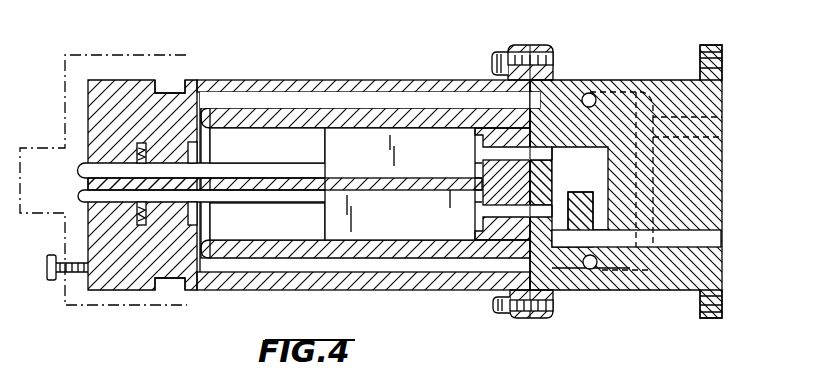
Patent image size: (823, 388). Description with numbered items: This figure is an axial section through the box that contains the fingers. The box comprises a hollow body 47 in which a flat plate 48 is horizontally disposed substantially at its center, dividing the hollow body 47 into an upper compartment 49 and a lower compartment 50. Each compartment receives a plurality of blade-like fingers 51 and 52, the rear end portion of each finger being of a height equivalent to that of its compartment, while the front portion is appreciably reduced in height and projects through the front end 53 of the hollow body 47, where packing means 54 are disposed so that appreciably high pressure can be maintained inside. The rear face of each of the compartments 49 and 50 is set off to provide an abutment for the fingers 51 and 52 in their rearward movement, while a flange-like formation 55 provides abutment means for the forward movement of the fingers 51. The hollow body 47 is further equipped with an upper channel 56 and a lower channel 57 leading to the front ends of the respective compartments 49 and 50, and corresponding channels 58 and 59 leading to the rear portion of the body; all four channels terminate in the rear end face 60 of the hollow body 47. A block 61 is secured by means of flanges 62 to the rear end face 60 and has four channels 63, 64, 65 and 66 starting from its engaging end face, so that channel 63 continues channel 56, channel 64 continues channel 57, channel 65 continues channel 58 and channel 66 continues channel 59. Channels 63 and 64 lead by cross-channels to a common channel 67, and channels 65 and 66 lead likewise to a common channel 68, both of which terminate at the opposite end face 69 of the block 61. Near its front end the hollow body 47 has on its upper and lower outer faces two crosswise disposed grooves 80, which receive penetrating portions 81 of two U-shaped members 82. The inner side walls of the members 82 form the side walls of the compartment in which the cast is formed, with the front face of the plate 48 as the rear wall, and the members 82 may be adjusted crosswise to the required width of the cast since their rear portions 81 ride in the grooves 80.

The hollow body 47 is at (318, 85).
The flat plate 48 is at (378, 182).
The upper compartment 49 is at (292, 131).
The lower compartment 50 is at (273, 233).
The blade-like fingers 51 is at (405, 132).
The blade-like fingers 52 is at (428, 228).
The front end 53 is at (130, 275).
The packing means 54 is at (140, 212).
The flange-like formation 55 is at (213, 130).
The upper channel 56 is at (347, 100).
The lower channel 57 is at (340, 268).
The channel 58 is at (503, 156).
The channel 59 is at (503, 210).
The rear end face 60 is at (530, 240).
The block 61 is at (690, 275).
The flanges 62 is at (547, 320).
The channel 63 is at (593, 86).
The channel 64 is at (595, 268).
The channel 65 is at (557, 148).
The channel 66 is at (562, 212).
The common channel 67 is at (716, 126).
The common channel 68 is at (712, 235).
The opposite end face 69 is at (723, 157).
The grooves 80 is at (175, 85).
The penetrating portions 81 is at (168, 78).
The U-shaped members 82 is at (82, 308).